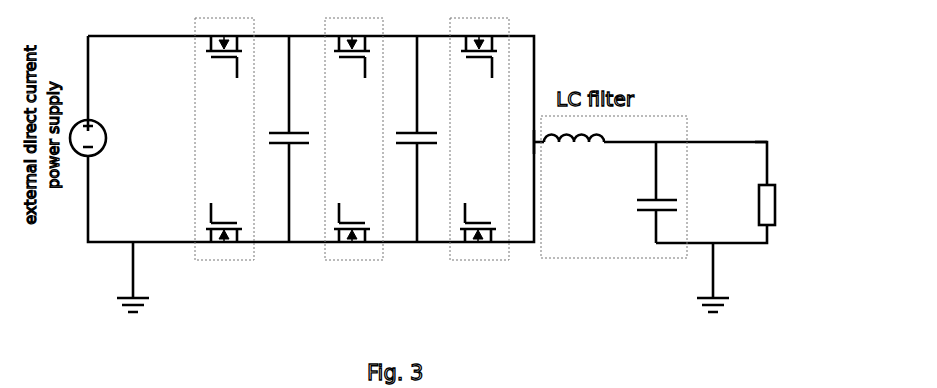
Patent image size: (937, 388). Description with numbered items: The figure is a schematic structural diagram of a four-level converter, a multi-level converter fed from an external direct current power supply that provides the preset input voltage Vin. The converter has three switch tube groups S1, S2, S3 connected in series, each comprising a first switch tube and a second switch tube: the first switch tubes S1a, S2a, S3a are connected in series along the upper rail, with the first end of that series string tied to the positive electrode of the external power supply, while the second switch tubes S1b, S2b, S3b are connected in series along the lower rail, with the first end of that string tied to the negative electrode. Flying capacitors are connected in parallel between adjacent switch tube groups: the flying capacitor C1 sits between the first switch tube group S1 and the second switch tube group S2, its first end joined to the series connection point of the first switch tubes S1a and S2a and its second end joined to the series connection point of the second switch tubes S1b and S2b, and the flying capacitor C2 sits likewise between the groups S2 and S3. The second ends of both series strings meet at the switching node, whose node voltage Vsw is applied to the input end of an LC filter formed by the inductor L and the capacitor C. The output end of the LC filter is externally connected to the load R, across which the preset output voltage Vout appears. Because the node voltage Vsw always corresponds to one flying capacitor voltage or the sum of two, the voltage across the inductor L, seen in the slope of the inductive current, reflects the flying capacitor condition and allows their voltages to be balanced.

The preset input voltage Vin is at (93, 83).
The third switch tube group S3 is at (217, 154).
The first switch tube of the third switch tube group S3a is at (224, 70).
The second switch tube of the third switch tube group S3b is at (224, 208).
The flying capacitor C2 is at (270, 139).
The second switch tube group S2 is at (346, 154).
The first switch tube of the second switch tube group S2a is at (352, 70).
The second switch tube of the second switch tube group S2b is at (352, 208).
The flying capacitor C1 is at (397, 139).
The first switch tube group S1 is at (472, 154).
The first switch tube of the first switch tube group S1a is at (479, 70).
The second switch tube of the first switch tube group S1b is at (478, 208).
The node voltage of the switch tube Vsw is at (508, 141).
The inductor L is at (574, 154).
The capacitor of the LC filter C is at (672, 192).
The load R is at (781, 205).
The preset output voltage Vout is at (781, 129).